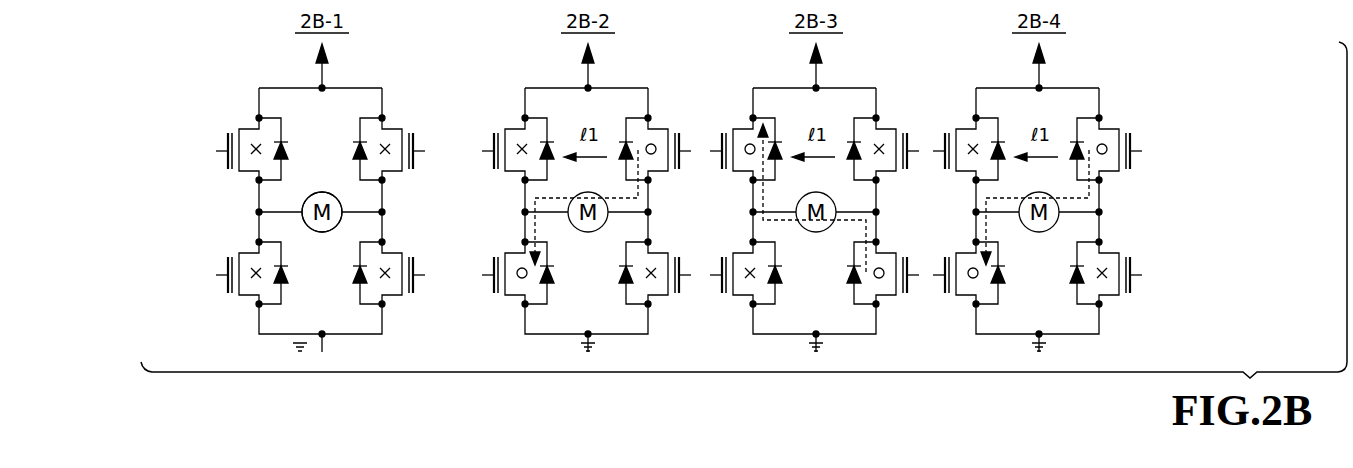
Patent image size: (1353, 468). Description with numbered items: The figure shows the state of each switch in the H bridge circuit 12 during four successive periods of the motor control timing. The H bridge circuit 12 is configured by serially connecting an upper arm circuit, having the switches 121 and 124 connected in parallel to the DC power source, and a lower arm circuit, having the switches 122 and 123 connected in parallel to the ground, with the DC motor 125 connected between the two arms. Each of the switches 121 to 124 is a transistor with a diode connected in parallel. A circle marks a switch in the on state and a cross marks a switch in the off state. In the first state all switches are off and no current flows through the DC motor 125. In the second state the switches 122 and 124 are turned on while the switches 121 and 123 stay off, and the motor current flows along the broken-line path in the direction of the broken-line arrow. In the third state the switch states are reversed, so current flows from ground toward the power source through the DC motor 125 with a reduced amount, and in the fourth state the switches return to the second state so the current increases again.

The H bridge circuit 12 is at (316, 196).
The switching element 121 is at (258, 165).
The switching element 122 is at (258, 283).
The switching element 123 is at (387, 287).
The switching element 124 is at (403, 128).
The DC motor 125 is at (322, 232).